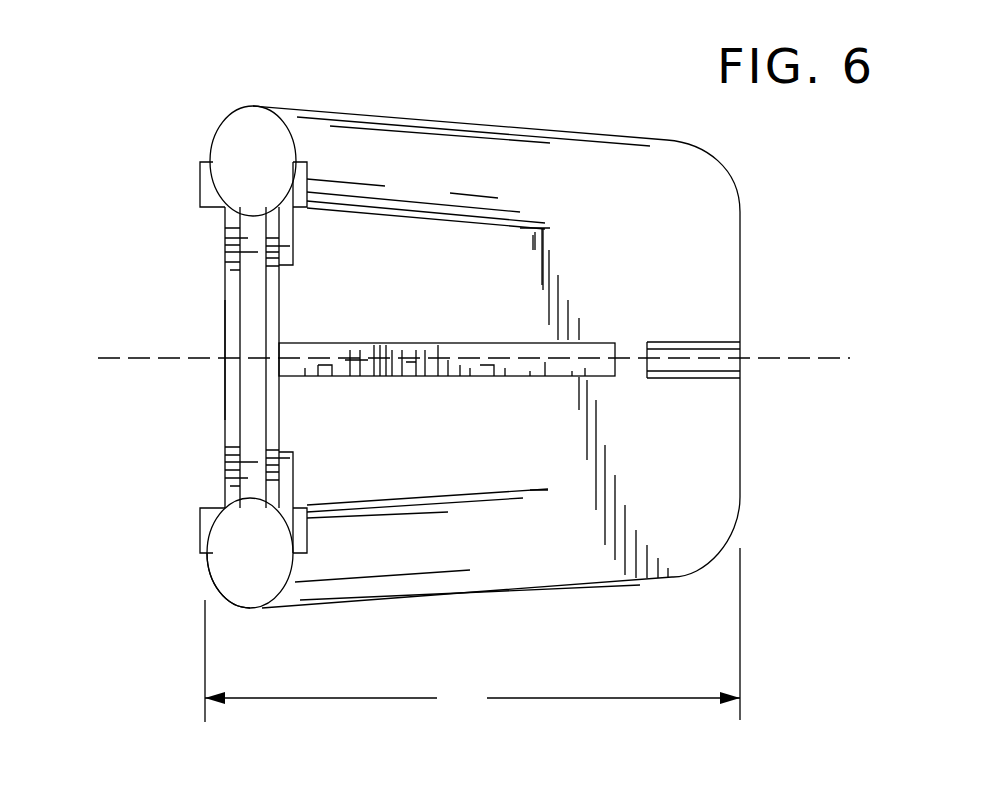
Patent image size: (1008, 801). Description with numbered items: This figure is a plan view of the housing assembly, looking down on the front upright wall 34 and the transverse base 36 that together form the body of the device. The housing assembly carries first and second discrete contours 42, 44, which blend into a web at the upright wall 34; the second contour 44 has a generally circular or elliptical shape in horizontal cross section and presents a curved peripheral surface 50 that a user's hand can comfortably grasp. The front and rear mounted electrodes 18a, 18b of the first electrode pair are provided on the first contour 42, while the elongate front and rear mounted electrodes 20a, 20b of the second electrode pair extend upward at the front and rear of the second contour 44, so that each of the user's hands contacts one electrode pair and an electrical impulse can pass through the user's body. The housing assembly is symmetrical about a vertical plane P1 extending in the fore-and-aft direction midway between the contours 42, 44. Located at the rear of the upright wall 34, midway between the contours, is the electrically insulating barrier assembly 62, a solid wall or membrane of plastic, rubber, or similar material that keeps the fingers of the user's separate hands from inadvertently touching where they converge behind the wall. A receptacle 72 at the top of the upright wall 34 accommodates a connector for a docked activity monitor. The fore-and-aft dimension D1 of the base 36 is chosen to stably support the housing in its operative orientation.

The front mounted electrode 18a is at (205, 193).
The rear mounted electrode 18b is at (340, 186).
The front mounted electrode 20a is at (200, 545).
The rear mounted electrode 20b is at (292, 481).
The upright wall 34 is at (218, 418).
The transverse base 36 is at (702, 423).
The first contour 42 is at (231, 98).
The second contour 44 is at (258, 618).
The curved peripheral surface 50 is at (232, 605).
The electrically insulating barrier assembly 62 is at (390, 334).
The receptacle 72 is at (250, 313).
The vertical plane P1 is at (138, 357).
The fore-and-aft dimension D1 is at (472, 635).